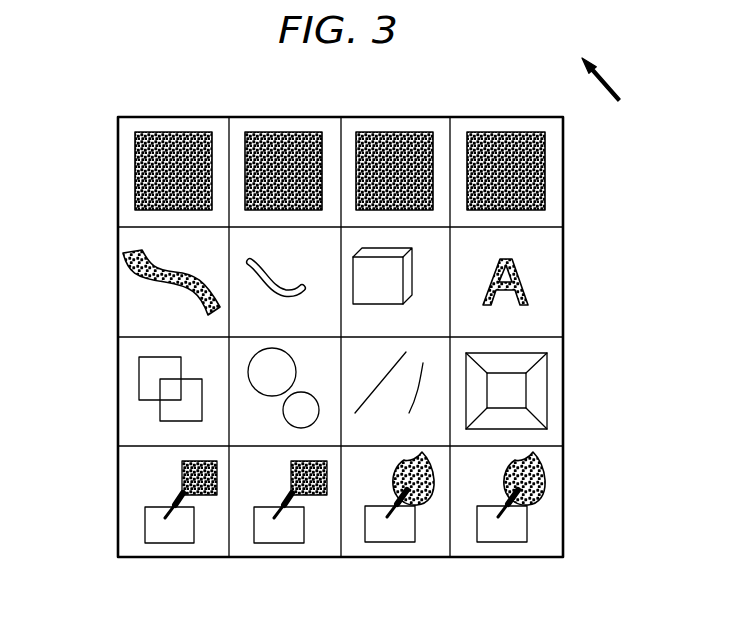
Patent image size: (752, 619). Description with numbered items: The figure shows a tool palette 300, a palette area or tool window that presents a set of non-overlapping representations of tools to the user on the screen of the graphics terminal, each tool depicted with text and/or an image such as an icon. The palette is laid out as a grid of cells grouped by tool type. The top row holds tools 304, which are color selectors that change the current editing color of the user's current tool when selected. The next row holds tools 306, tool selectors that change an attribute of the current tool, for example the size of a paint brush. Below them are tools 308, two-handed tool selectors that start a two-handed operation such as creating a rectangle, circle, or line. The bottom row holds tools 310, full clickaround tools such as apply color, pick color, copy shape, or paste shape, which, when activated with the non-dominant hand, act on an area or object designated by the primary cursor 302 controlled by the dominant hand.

The tool palette 300 is at (118, 115).
The primary cursor 302 is at (610, 85).
The color selector tools 304 is at (240, 125).
The tool selector tools 306 is at (430, 237).
The two-handed tool selectors 308 is at (423, 346).
The full clickaround tools 310 is at (135, 465).